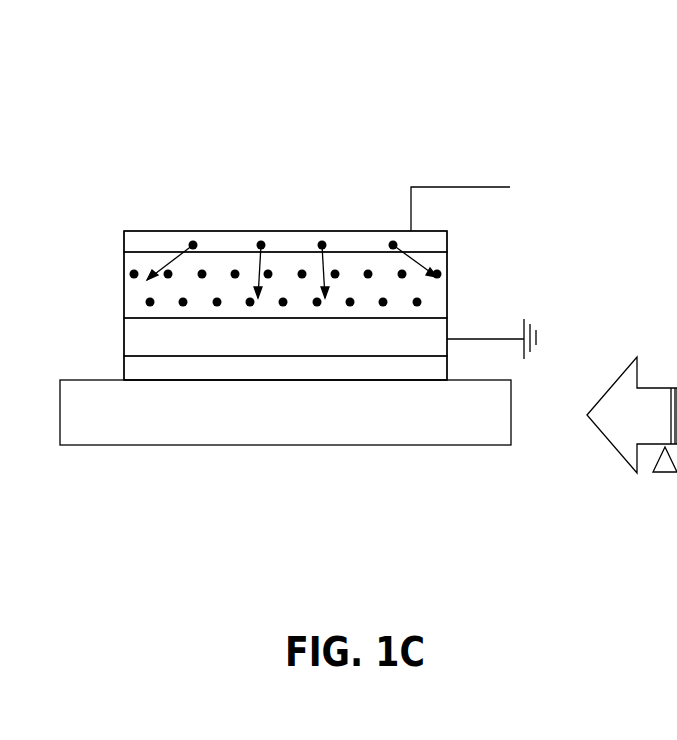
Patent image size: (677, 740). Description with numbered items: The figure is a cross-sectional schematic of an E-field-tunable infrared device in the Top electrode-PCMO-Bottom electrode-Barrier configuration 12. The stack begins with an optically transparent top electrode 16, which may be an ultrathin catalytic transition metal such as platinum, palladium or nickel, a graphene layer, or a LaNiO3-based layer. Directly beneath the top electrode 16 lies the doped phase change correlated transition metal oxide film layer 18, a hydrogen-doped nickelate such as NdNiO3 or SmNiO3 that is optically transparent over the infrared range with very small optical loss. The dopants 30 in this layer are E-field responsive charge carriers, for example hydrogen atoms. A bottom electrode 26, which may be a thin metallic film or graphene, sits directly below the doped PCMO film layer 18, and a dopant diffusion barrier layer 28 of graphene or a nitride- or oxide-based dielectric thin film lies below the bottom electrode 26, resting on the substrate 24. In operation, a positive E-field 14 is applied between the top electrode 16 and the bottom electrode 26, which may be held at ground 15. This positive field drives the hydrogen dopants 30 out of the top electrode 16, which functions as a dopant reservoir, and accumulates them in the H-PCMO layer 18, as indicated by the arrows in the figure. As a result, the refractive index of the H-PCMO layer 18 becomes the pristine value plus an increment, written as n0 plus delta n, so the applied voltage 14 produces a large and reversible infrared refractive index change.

The Top electrode-PCMO-Bottom electrode-Barrier configuration 12 is at (378, 117).
The positive E-field 14 is at (483, 187).
The ground 15 is at (511, 343).
The optically transparent top electrode 16 is at (283, 240).
The doped phase change correlated transition metal oxide (PCMO) film layer 18 is at (187, 265).
The substrate 24 is at (350, 422).
The bottom electrode 26 is at (172, 337).
The dopant diffusion barrier layer 28 is at (293, 365).
The dopants 30 is at (343, 280).